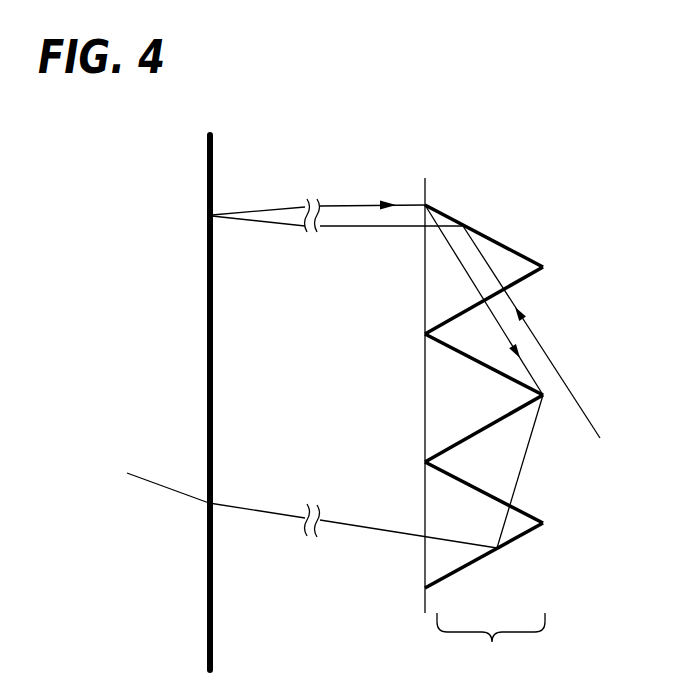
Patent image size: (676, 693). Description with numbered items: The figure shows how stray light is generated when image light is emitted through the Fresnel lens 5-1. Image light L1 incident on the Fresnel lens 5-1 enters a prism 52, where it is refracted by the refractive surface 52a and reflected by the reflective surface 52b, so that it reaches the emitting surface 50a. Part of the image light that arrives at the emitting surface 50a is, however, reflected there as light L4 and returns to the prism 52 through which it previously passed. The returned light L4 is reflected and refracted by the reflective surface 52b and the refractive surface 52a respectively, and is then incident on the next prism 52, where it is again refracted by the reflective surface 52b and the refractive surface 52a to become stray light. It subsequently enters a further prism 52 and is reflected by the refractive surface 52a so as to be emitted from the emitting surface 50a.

The emitting surface 50a is at (206, 178).
The prism 52 is at (473, 376).
The refractive surface 52a is at (507, 287).
The reflective surface 52b is at (505, 240).
The Fresnel lens 5-1 is at (493, 642).
The image light L1 is at (585, 415).
The light L4 is at (355, 208).